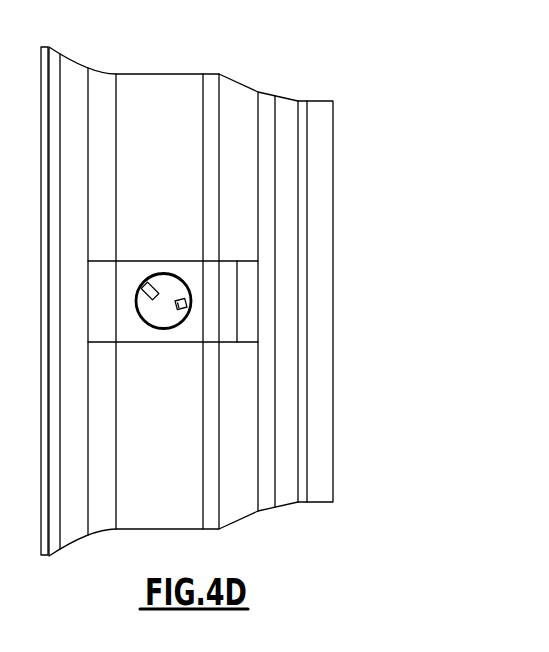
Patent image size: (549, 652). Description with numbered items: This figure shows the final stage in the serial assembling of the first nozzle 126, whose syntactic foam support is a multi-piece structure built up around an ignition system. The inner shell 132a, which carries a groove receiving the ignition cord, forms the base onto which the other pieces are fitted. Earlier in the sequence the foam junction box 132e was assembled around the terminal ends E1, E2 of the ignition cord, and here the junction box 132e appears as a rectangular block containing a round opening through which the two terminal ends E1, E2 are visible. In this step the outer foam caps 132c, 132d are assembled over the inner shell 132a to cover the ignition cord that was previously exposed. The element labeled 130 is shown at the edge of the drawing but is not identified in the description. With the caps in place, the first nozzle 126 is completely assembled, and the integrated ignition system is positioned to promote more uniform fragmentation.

The first nozzle 126 is at (248, 301).
The flange 130 is at (46, 64).
The inner shell 132a is at (287, 121).
The outer foam cap 132c is at (137, 92).
The outer foam cap 132d is at (230, 96).
The foam junction box 132e is at (220, 287).
The terminal end E1 is at (161, 290).
The terminal end E2 is at (174, 313).